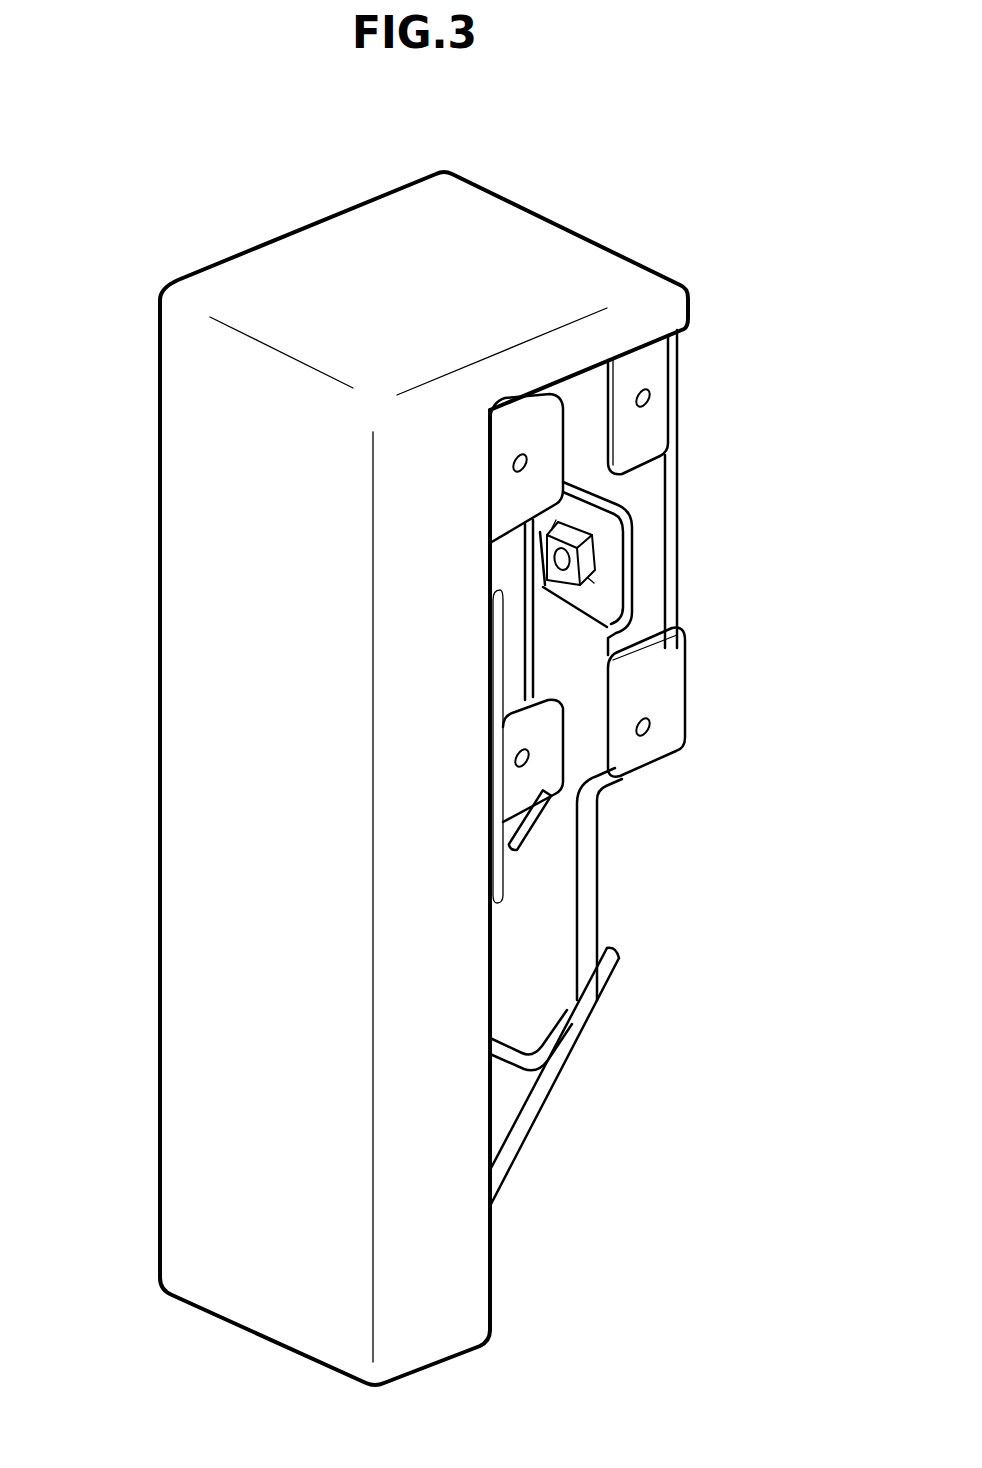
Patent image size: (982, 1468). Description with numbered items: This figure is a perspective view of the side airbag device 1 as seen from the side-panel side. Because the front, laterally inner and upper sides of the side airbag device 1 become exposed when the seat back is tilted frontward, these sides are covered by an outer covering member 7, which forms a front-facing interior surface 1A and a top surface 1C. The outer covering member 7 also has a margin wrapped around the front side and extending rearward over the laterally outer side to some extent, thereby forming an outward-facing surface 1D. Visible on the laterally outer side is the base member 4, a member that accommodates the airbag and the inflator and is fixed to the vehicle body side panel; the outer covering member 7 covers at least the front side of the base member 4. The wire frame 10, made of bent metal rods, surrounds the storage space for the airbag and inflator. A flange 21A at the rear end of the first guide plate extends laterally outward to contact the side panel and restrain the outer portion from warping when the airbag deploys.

The side airbag device 1 is at (163, 198).
The outer covering member 7 is at (381, 773).
The front-facing interior surface 1A is at (243, 538).
The top surface 1C is at (507, 258).
The outward-facing surface 1D is at (453, 1255).
The base member 4 is at (737, 480).
The wire frame 10 is at (682, 533).
The flange 21A is at (497, 855).